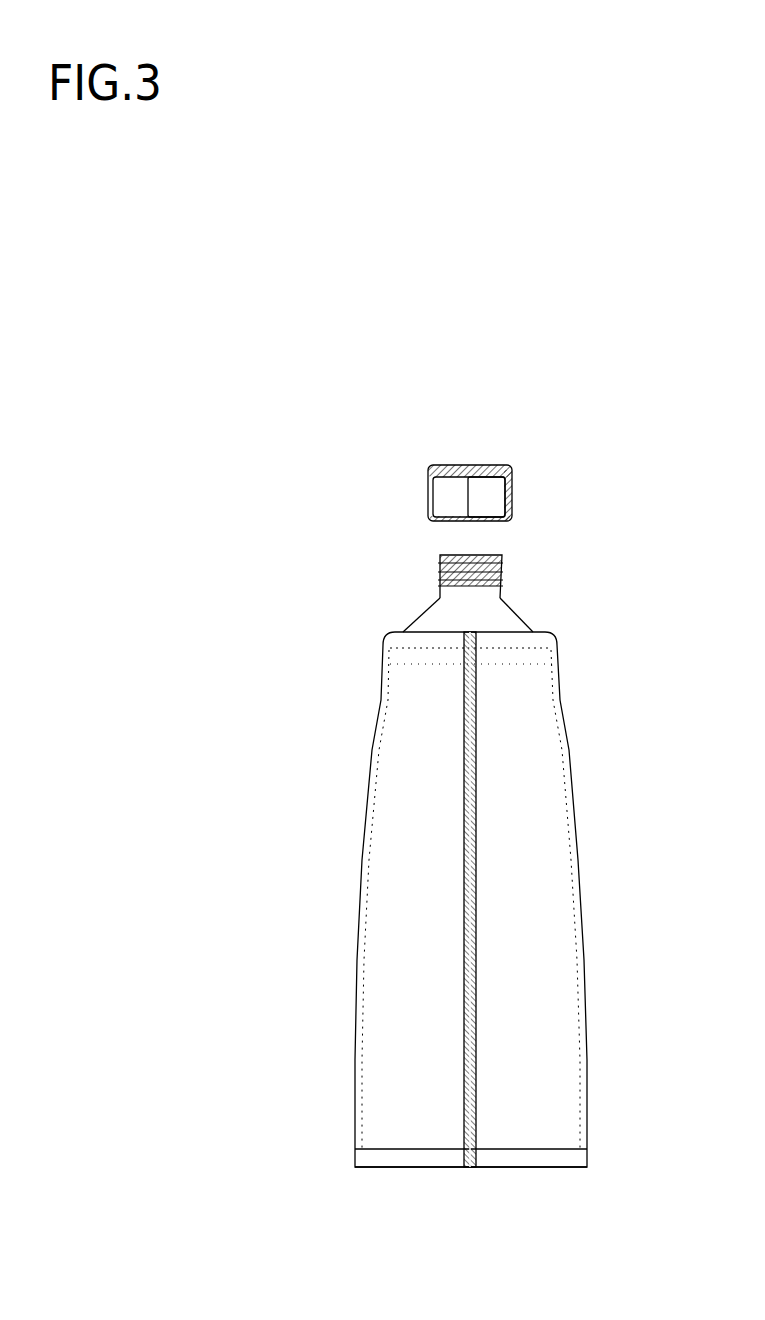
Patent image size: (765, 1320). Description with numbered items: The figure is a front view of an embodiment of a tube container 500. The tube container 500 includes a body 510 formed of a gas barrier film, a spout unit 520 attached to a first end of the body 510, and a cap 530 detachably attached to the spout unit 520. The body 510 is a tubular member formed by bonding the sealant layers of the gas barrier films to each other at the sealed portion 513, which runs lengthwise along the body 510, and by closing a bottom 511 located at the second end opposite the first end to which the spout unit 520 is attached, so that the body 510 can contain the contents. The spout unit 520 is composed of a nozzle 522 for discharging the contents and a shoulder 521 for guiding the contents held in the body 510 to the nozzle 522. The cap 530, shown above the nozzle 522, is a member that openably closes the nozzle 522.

The tube container 500 is at (465, 392).
The body 510 is at (573, 740).
The bottom 511 is at (560, 1156).
The sealed portion 513 is at (464, 749).
The spout unit 520 is at (527, 604).
The shoulder 521 is at (452, 620).
The nozzle 522 is at (438, 562).
The cap 530 is at (419, 463).